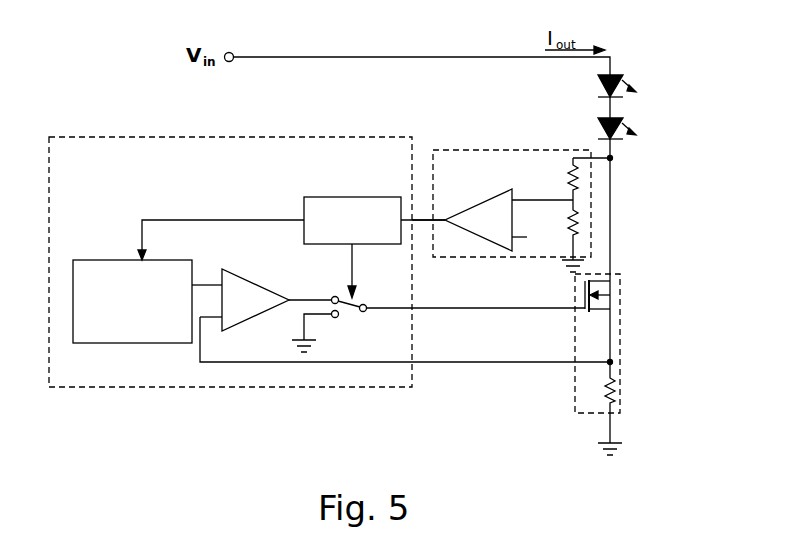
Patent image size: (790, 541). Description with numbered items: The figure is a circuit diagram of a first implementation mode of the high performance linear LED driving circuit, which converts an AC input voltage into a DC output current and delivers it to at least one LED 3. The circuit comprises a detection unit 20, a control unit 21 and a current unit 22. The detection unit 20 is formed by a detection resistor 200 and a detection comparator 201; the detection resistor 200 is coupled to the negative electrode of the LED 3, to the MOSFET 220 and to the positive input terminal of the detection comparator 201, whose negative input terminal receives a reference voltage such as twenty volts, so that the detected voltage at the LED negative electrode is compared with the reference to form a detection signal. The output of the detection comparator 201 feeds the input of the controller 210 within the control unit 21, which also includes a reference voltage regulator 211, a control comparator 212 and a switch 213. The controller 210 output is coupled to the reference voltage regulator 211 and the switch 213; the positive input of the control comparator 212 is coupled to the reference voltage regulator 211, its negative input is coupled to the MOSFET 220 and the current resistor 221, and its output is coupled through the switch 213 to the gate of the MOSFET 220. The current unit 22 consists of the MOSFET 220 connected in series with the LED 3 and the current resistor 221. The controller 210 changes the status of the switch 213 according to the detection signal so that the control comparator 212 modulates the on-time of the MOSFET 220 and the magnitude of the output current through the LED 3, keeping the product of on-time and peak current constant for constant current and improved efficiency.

The LED 3 is at (618, 75).
The detection unit 20 is at (440, 150).
The detection resistor 200 is at (582, 218).
The detection comparator 201 is at (466, 208).
The control unit 21 is at (100, 136).
The controller 210 is at (322, 197).
The reference voltage regulator 211 is at (86, 259).
The control comparator 212 is at (254, 281).
The switch 213 is at (364, 319).
The current unit 22 is at (622, 335).
The MOSFET 220 is at (612, 298).
The current resistor 221 is at (614, 388).